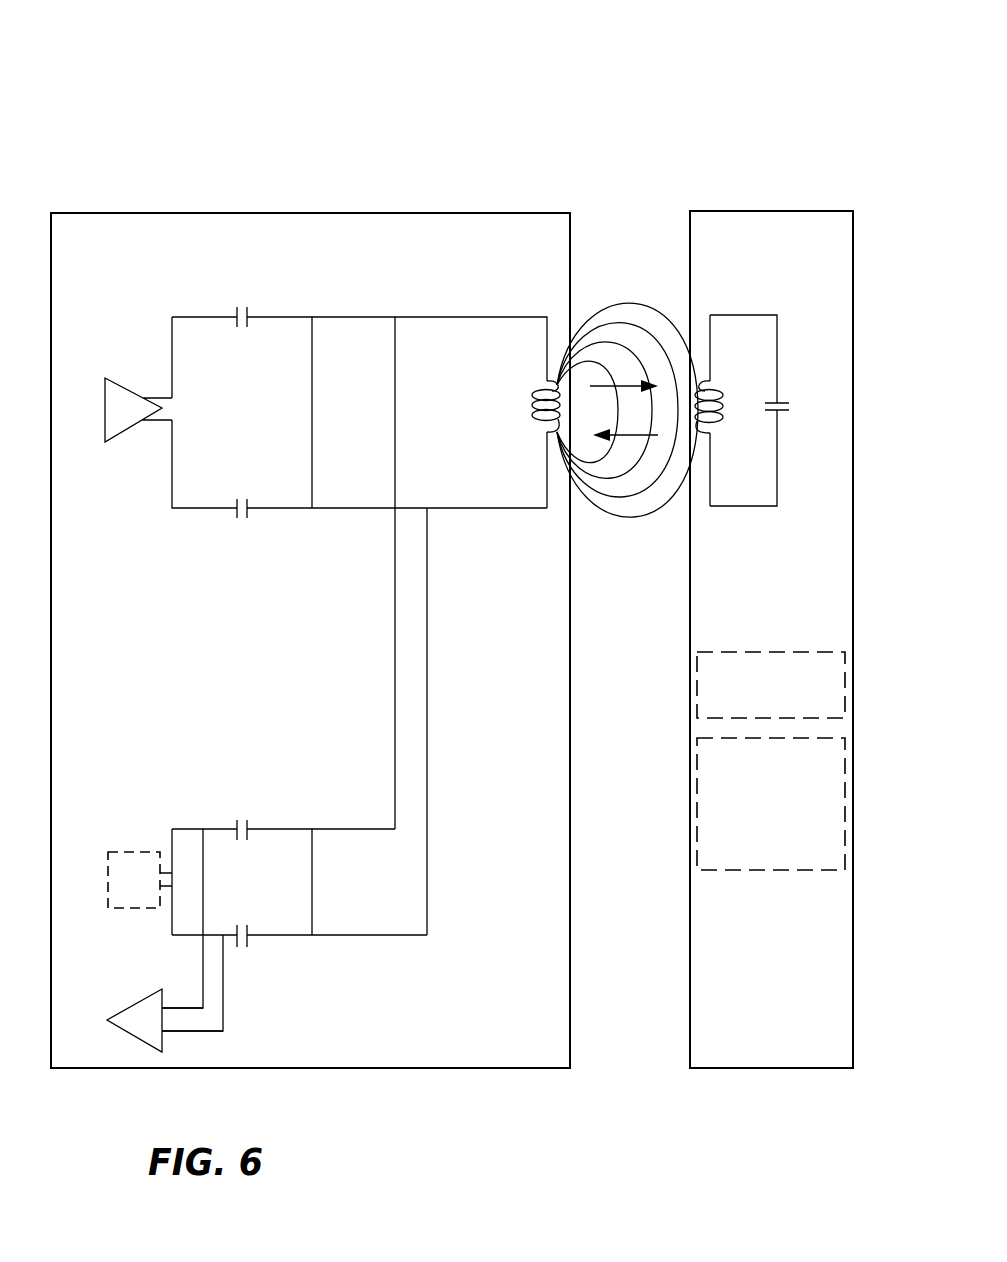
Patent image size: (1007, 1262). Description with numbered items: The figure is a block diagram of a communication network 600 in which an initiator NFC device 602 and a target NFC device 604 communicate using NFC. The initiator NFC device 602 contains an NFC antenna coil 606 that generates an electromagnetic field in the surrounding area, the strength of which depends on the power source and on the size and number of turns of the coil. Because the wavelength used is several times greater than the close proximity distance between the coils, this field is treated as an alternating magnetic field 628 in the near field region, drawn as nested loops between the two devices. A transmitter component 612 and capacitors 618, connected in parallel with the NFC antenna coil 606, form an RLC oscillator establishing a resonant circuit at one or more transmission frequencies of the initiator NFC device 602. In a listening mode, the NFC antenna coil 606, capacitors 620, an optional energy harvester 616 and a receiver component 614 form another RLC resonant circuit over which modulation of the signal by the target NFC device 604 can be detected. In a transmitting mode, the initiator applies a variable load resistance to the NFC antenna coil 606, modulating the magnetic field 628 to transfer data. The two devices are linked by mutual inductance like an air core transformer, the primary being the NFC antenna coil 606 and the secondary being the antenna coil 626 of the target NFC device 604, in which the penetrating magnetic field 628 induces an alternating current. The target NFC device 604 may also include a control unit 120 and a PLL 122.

The communication network 600 is at (727, 54).
The initiator NFC device 602 is at (268, 213).
The target NFC device 604 is at (795, 211).
The NFC antenna coil 606 is at (545, 424).
The transmitter component 612 is at (125, 388).
The receiver component 614 is at (147, 997).
The energy harvester 616 is at (135, 852).
The capacitor 618 is at (247, 330).
The capacitors 620 is at (247, 840).
The antenna coil 626 is at (710, 440).
The magnetic field 628 is at (592, 305).
The control unit 120 is at (771, 685).
The PLL 122 is at (771, 804).